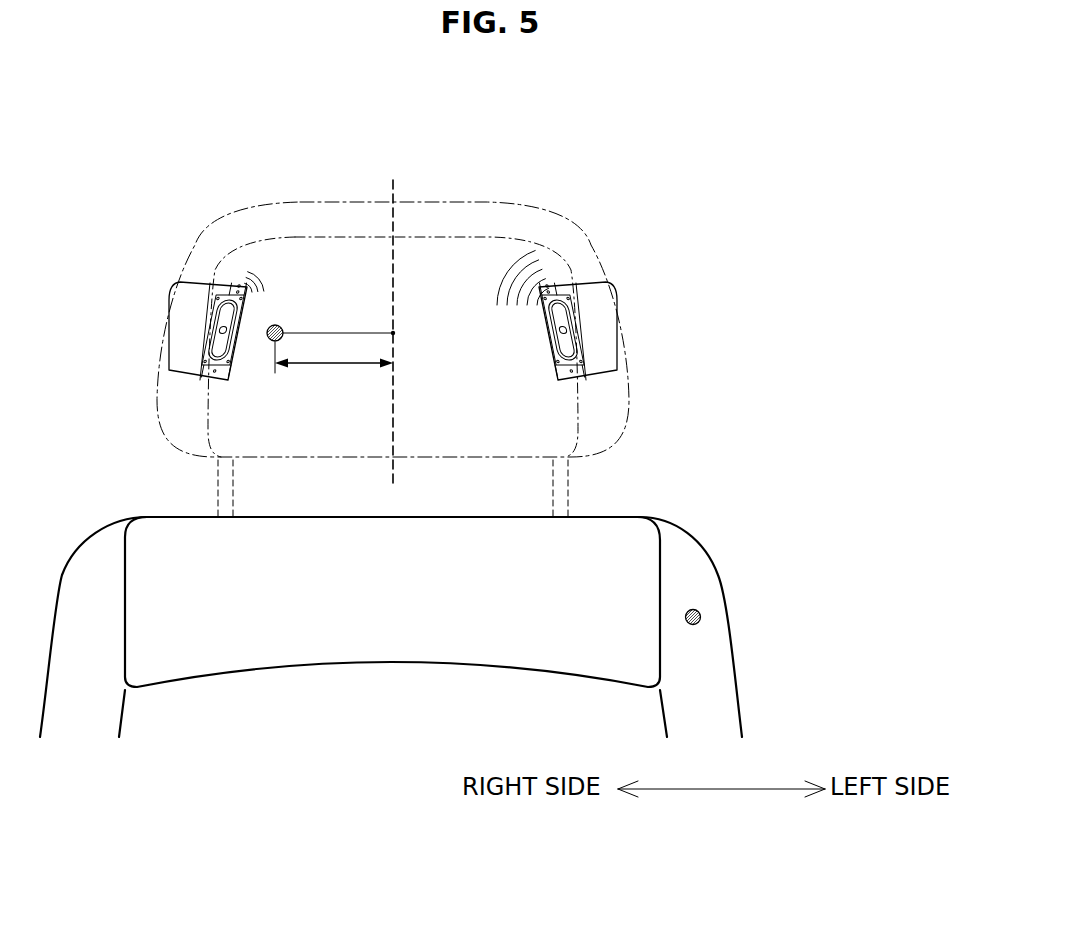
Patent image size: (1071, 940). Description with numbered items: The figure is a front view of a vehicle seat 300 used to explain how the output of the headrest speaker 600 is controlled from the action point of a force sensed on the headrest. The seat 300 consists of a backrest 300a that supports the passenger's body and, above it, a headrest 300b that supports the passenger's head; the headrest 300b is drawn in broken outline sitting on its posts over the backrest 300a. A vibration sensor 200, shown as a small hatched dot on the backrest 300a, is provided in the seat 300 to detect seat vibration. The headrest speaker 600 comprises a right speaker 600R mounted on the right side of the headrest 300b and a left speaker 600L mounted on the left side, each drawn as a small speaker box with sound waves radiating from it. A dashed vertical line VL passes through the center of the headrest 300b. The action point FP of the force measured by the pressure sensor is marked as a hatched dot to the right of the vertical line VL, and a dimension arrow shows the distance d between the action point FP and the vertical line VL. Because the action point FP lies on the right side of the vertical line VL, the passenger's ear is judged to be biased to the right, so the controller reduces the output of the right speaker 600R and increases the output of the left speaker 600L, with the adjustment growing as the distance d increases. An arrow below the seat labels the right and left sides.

The headrest speaker 600 is at (225, 148).
The right speaker 600R is at (200, 290).
The left speaker 600L is at (586, 290).
The seat 300 is at (726, 402).
The backrest 300a is at (688, 566).
The headrest 300b is at (618, 420).
The vibration sensor 200 is at (701, 615).
The vertical line VL is at (395, 319).
The action point FP is at (268, 340).
The distance d is at (334, 367).